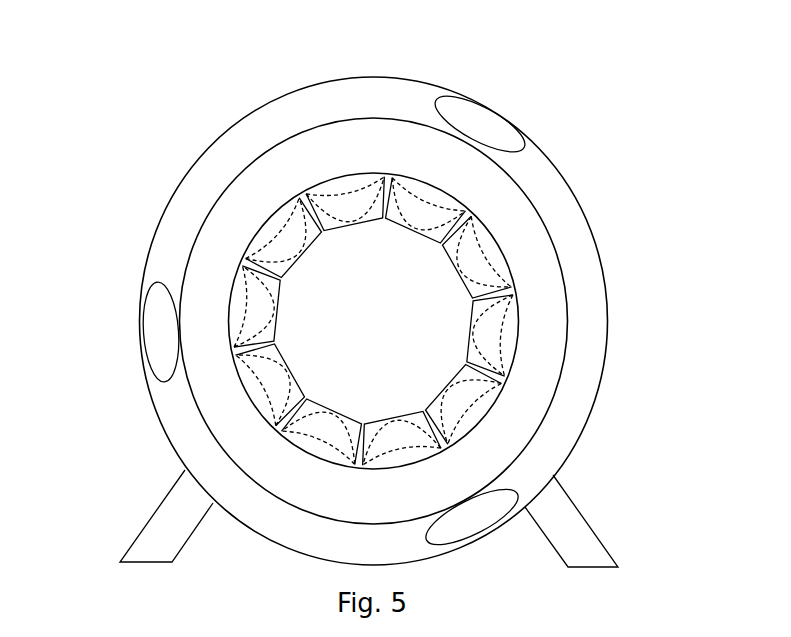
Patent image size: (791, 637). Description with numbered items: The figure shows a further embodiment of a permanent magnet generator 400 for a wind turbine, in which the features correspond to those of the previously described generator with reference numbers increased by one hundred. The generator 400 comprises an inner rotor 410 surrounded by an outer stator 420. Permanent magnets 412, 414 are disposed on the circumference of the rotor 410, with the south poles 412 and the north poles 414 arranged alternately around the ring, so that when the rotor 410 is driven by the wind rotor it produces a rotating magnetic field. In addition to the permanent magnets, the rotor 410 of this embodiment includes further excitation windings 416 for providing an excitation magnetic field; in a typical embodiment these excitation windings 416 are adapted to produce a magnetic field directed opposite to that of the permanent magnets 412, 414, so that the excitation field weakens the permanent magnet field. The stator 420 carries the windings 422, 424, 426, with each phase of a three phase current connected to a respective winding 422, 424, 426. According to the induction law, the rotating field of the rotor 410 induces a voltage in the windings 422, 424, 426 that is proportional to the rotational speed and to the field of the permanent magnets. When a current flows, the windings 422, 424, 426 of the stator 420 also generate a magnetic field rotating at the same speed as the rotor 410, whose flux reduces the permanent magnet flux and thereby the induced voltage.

The generator 400 is at (247, 60).
The rotor 410 is at (276, 187).
The permanent magnet 412 is at (502, 337).
The permanent magnet 414 is at (498, 260).
The excitation windings 416 is at (253, 283).
The stator 420 is at (597, 303).
The winding 422 is at (155, 328).
The winding 424 is at (475, 527).
The winding 426 is at (493, 128).